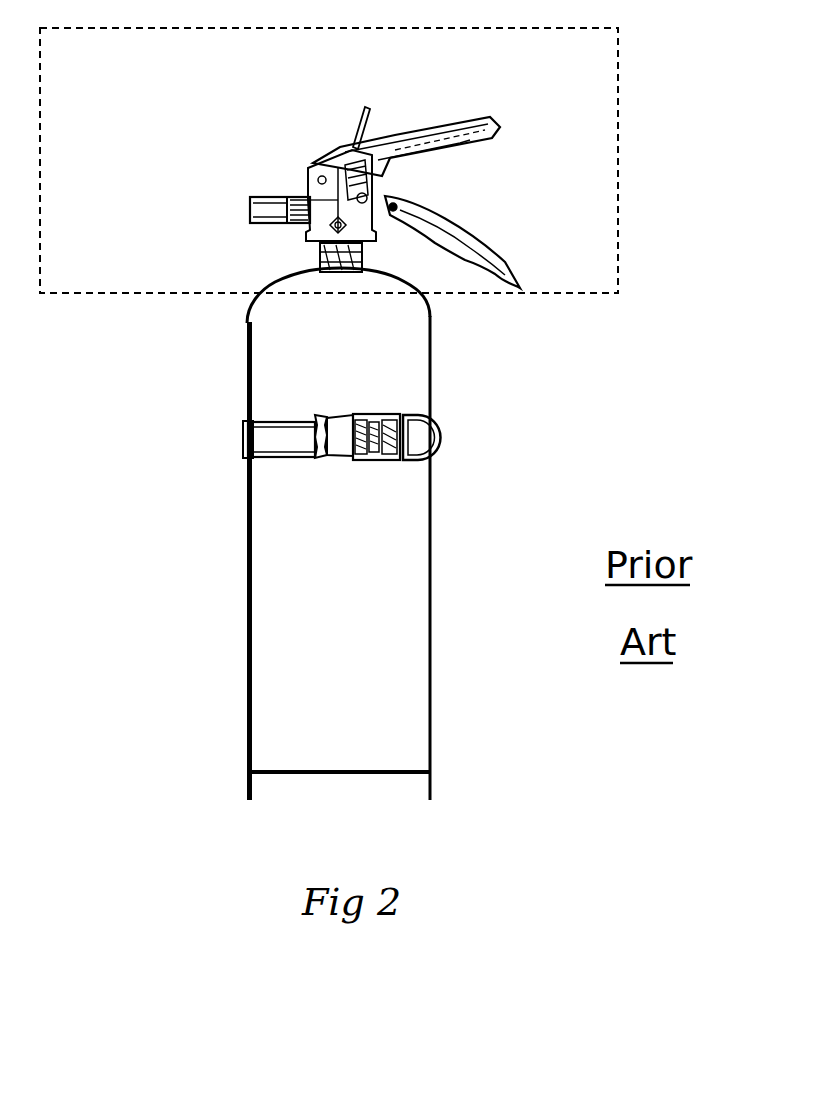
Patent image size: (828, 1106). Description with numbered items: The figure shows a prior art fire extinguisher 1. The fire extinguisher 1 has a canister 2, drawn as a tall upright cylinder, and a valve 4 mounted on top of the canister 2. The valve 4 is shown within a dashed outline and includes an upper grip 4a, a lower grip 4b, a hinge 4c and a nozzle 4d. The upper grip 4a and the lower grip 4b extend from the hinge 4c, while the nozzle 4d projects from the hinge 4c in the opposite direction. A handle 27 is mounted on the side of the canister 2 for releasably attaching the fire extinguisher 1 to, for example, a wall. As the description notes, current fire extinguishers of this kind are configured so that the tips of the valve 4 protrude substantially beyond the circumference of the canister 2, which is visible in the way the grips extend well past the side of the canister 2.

The fire extinguisher 1 is at (516, 404).
The canister 2 is at (247, 358).
The handle 27 is at (243, 433).
The valve 4 is at (621, 155).
The upper grip 4a is at (497, 121).
The lower grip 4b is at (467, 227).
The hinge 4c is at (303, 178).
The nozzle 4d is at (247, 207).